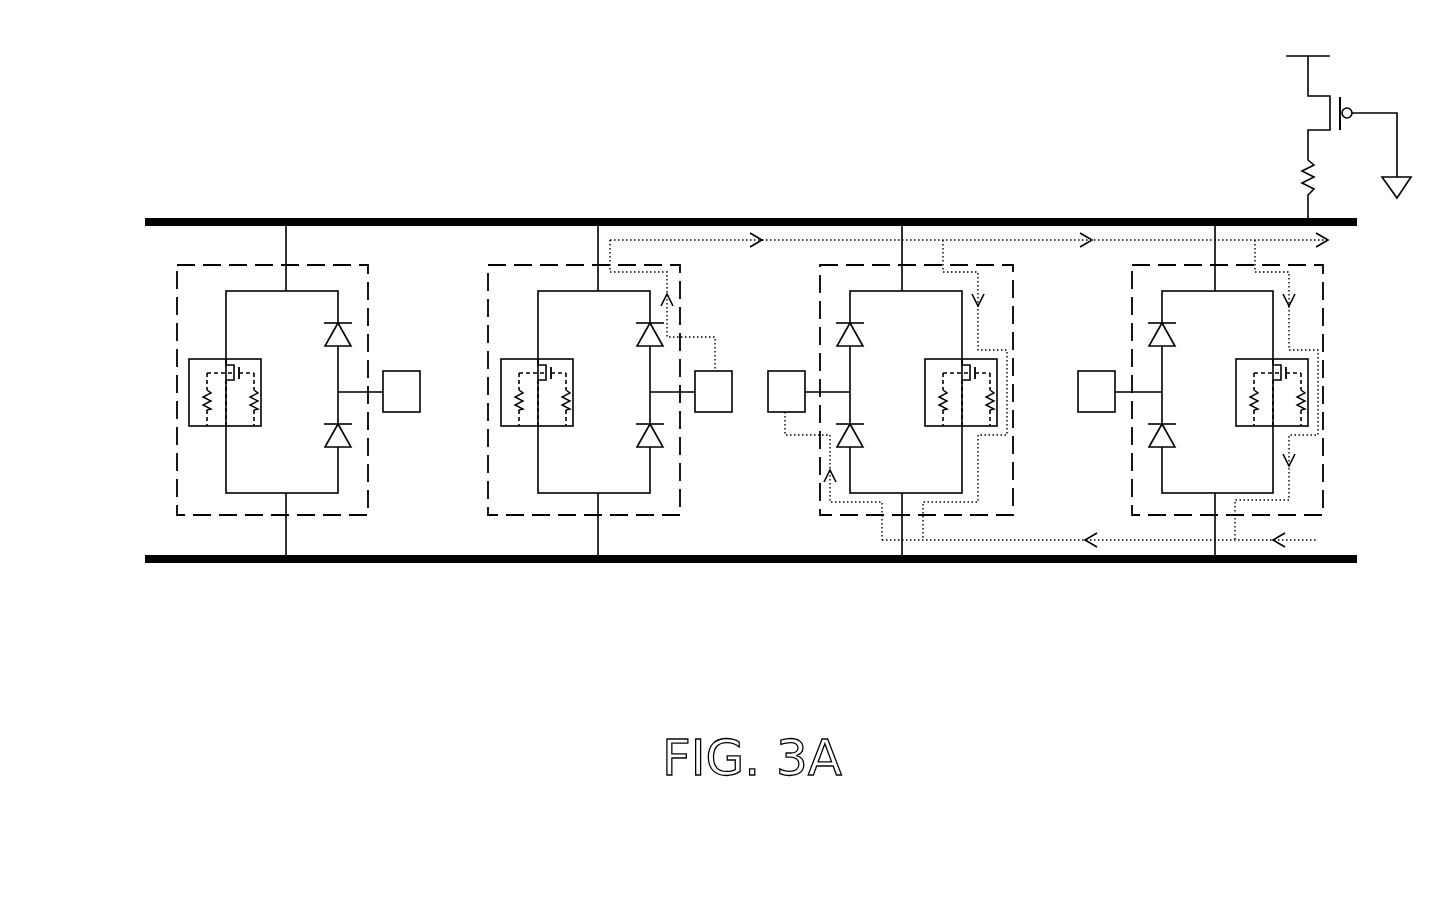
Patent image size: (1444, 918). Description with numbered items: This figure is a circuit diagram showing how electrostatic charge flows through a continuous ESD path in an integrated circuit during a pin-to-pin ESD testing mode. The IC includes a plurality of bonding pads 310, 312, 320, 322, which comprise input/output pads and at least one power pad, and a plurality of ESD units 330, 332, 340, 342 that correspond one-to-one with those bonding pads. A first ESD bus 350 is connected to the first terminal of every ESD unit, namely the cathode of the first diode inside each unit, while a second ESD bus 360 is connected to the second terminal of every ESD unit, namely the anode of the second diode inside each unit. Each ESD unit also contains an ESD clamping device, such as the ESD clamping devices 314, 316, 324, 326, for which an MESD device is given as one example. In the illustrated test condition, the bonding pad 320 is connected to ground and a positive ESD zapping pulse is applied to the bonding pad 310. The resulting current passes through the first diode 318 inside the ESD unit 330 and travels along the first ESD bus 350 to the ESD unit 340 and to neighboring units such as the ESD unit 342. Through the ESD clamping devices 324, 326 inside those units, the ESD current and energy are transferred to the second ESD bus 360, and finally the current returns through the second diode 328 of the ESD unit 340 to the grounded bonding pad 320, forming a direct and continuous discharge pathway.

The bonding pad 310 is at (732, 392).
The bonding pad 312 is at (420, 392).
The ESD clamping device 314 is at (550, 426).
The ESD clamping device 316 is at (236, 426).
The first diode 318 is at (636, 323).
The bonding pad 320 is at (768, 392).
The bonding pad 322 is at (1078, 392).
The ESD clamping device 324 is at (945, 359).
The ESD clamping device 326 is at (1262, 359).
The second diode 328 is at (858, 427).
The ESD unit 330 is at (680, 297).
The ESD unit 332 is at (370, 288).
The ESD unit 340 is at (1013, 296).
The ESD unit 342 is at (1323, 298).
The first ESD bus 350 is at (480, 218).
The second ESD bus 360 is at (375, 563).